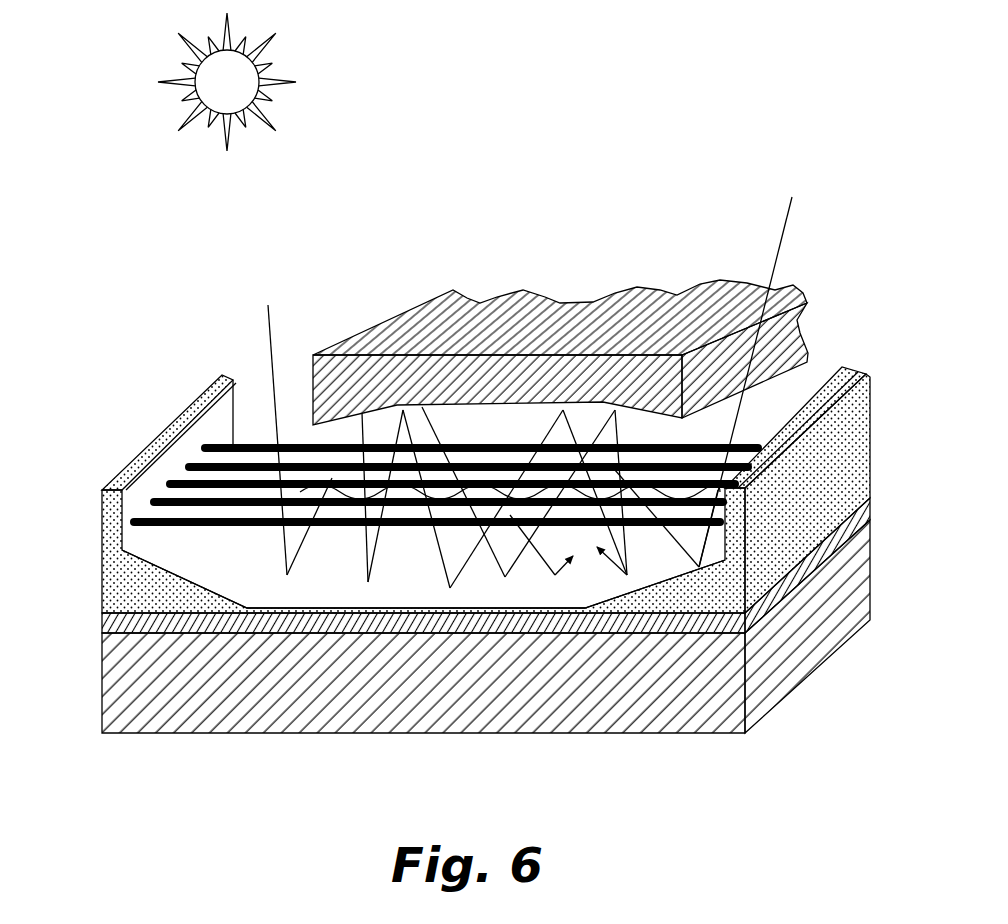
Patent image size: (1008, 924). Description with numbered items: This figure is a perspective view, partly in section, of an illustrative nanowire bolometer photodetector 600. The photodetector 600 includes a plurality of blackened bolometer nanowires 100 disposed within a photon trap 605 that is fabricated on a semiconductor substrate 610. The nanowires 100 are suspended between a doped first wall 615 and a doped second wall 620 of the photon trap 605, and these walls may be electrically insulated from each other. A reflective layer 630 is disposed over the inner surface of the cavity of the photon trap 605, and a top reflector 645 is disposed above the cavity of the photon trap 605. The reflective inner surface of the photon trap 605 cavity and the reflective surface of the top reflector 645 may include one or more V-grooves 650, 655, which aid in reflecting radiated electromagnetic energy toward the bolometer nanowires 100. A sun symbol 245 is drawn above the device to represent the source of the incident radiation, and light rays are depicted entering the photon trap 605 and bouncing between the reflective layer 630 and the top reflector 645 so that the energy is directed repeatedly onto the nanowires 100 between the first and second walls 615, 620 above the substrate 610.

The sun 245 is at (227, 82).
The photodetector 600 is at (780, 114).
The photon trap 605 is at (296, 357).
The semiconductor substrate 610 is at (103, 667).
The first wall 615 is at (208, 387).
The second wall 620 is at (862, 377).
The reflective layer 630 is at (163, 467).
The top reflector 645 is at (575, 300).
The V-groove 650 is at (249, 608).
The V-groove 655 is at (592, 563).
The blackened bolometer nanowires 100 is at (750, 446).